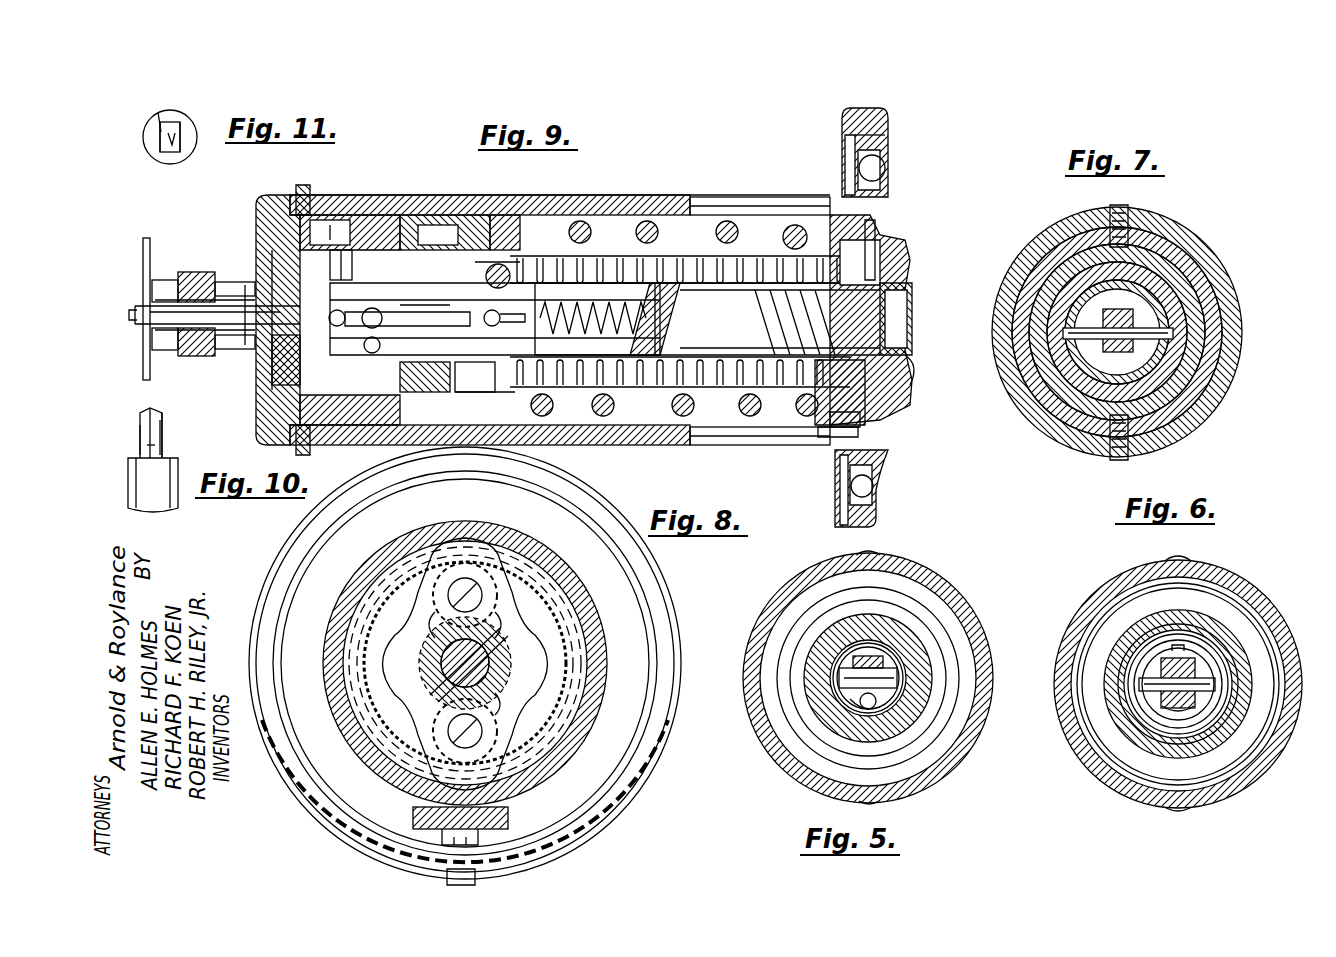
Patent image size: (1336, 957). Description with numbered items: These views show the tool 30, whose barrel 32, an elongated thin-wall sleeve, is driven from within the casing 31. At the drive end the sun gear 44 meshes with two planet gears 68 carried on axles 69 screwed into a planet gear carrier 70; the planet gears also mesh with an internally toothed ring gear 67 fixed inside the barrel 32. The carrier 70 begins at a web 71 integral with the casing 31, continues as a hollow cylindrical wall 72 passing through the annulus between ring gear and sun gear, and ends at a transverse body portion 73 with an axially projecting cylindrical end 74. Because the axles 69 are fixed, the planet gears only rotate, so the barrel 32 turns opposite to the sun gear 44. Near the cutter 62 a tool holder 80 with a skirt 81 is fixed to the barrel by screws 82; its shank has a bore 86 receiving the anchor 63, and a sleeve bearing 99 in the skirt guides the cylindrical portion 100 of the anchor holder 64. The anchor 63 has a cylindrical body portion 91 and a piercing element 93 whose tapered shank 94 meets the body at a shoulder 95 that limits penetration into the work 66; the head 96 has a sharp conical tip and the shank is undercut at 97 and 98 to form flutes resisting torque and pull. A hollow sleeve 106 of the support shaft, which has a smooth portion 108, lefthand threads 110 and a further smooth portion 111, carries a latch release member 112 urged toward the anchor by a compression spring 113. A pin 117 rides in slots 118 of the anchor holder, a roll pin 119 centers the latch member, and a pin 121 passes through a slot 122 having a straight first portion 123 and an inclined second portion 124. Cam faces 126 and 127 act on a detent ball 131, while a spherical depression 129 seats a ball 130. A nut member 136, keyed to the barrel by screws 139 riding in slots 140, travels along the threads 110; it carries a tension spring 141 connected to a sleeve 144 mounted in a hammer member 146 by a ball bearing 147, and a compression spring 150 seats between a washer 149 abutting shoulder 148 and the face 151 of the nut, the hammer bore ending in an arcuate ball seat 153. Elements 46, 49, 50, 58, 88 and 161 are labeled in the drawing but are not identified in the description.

In FIG. 9, the tool 30 is at (674, 192).
In FIG. 8, the casing 31 is at (374, 553).
In FIG. 9, the barrel 32 is at (607, 202).
In FIG. 8, the barrel 32 is at (370, 579).
In FIG. 7, the barrel 32 is at (1193, 232).
In FIG. 5, the barrel 32 is at (785, 580).
In FIG. 6, the barrel 32 is at (1214, 581).
In FIG. 8, the sun gear 44 is at (420, 657).
In FIG. 8, the sun gear 46 is at (465, 663).
In FIG. 9, the lower mounting flange 49 is at (880, 473).
In FIG. 8, the outer casing 50 is at (643, 775).
In FIG. 9, the upper mounting flange 58 is at (870, 110).
In FIG. 9, the cutter 62 is at (204, 274).
In FIG. 9, the anchor 63 is at (238, 284).
In FIG. 9, the anchor holder 64 is at (318, 198).
In FIG. 9, the work 66 is at (154, 255).
In FIG. 8, the ring gear 67 is at (464, 564).
In FIG. 8, the planet gears 68 is at (505, 625).
In FIG. 8, the axles 69 is at (438, 627).
In FIG. 9, the planet gear carrier 70 is at (918, 264).
In FIG. 8, the web 71 is at (555, 617).
In FIG. 8, the hollow cylindrical wall 72 is at (446, 723).
In FIG. 8, the body portion 73 is at (509, 700).
In FIG. 9, the cylindrical end 74 is at (916, 291).
In FIG. 8, the cylindrical end 74 is at (507, 790).
In FIG. 9, the tool holder 80 is at (261, 410).
In FIG. 7, the skirt 81 is at (1150, 223).
In FIG. 5, the skirt 81 is at (787, 744).
In FIG. 7, the screws 82 is at (1120, 202).
In FIG. 5, the screws 82 is at (875, 550).
In FIG. 6, the screws 82 is at (1176, 557).
In FIG. 9, the bore 86 is at (248, 345).
In FIG. 9, the collar 88 is at (170, 278).
In FIG. 9, the cylindrical body portion 91 is at (170, 341).
In FIG. 11, the cylindrical body portion 91 is at (155, 160).
In FIG. 10, the cylindrical body portion 91 is at (133, 492).
In FIG. 9, the piercing element 93 is at (135, 315).
In FIG. 11, the piercing element 93 is at (158, 112).
In FIG. 10, the piercing element 93 is at (145, 412).
In FIG. 10, the tapered shank 94 is at (163, 420).
In FIG. 9, the shoulder 95 is at (130, 304).
In FIG. 11, the shoulder 95 is at (183, 160).
In FIG. 10, the shoulder 95 is at (140, 452).
In FIG. 11, the head 96 is at (170, 122).
In FIG. 10, the head 96 is at (165, 410).
In FIG. 11, the undercut flute 97 is at (183, 126).
In FIG. 10, the undercut flute 97 is at (163, 440).
In FIG. 11, the undercut flute 98 is at (157, 132).
In FIG. 10, the undercut flute 98 is at (140, 446).
In FIG. 9, the sleeve bearing 99 is at (268, 388).
In FIG. 7, the sleeve bearing 99 is at (1060, 237).
In FIG. 5, the sleeve bearing 99 is at (832, 737).
In FIG. 7, the cylindrical portion 100 is at (1113, 370).
In FIG. 9, the sleeve 106 is at (370, 352).
In FIG. 5, the sleeve 106 is at (894, 697).
In FIG. 6, the sleeve 106 is at (1217, 711).
In FIG. 9, the smooth portion 108 is at (730, 321).
In FIG. 9, the lefthand threads 110 is at (806, 305).
In FIG. 9, the smooth portion 111 is at (908, 323).
In FIG. 9, the latch release member 112 is at (567, 238).
In FIG. 7, the latch release member 112 is at (1130, 314).
In FIG. 5, the latch release member 112 is at (850, 655).
In FIG. 6, the latch release member 112 is at (1157, 721).
In FIG. 9, the compression spring 113 is at (630, 238).
In FIG. 9, the pin 117 is at (329, 232).
In FIG. 7, the pin 117 is at (1138, 280).
In FIG. 9, the slots 118 is at (291, 360).
In FIG. 9, the roll pin 119 is at (382, 320).
In FIG. 5, the roll pin 119 is at (896, 645).
In FIG. 9, the pin 121 is at (607, 319).
In FIG. 6, the pin 121 is at (1129, 716).
In FIG. 9, the slot 122 is at (496, 312).
In FIG. 6, the slot 122 is at (1160, 657).
In FIG. 9, the first portion 123 is at (495, 365).
In FIG. 9, the second portion 124 is at (410, 323).
In FIG. 9, the cam face 126 is at (495, 319).
In FIG. 9, the cam face 127 is at (425, 317).
In FIG. 5, the spherical depression 129 is at (870, 710).
In FIG. 9, the ball 130 is at (416, 389).
In FIG. 5, the ball 130 is at (858, 708).
In FIG. 6, the ball 130 is at (1172, 714).
In FIG. 9, the detent ball 131 is at (497, 247).
In FIG. 6, the detent ball 131 is at (1178, 643).
In FIG. 9, the nut member 136 is at (856, 392).
In FIG. 9, the screws 139 is at (816, 442).
In FIG. 9, the slots 140 is at (752, 200).
In FIG. 9, the tension spring 141 is at (785, 255).
In FIG. 9, the sleeve 144 is at (470, 215).
In FIG. 6, the sleeve 144 is at (1195, 744).
In FIG. 9, the hammer member 146 is at (408, 215).
In FIG. 6, the hammer member 146 is at (1248, 605).
In FIG. 9, the ball bearing 147 is at (428, 235).
In FIG. 9, the shoulder 148 is at (485, 405).
In FIG. 9, the washer 149 is at (502, 251).
In FIG. 9, the compression spring 150 is at (770, 440).
In FIG. 9, the flat transverse face 151 is at (798, 392).
In FIG. 9, the arcuate ball seat 153 is at (352, 265).
In FIG. 9, the lip 161 is at (905, 381).